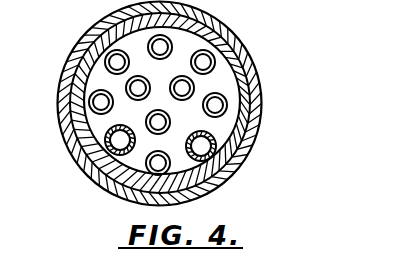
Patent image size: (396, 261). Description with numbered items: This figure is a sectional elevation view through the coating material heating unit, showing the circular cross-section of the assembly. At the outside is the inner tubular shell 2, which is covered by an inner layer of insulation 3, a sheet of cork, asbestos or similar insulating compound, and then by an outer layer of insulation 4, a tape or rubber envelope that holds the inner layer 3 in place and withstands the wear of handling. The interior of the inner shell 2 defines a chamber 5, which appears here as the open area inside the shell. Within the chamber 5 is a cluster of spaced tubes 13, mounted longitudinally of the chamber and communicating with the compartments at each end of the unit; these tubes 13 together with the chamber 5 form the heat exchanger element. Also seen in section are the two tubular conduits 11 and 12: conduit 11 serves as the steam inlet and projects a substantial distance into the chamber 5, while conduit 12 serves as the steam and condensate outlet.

The inner tubular shell 2 is at (238, 126).
The inner layer of insulation 3 is at (243, 107).
The outer layer of insulation 4 is at (250, 80).
The chamber 5 is at (97, 125).
The tubular conduit 11 is at (207, 141).
The tubular conduit 12 is at (94, 164).
The spaced tubes 13 is at (210, 64).